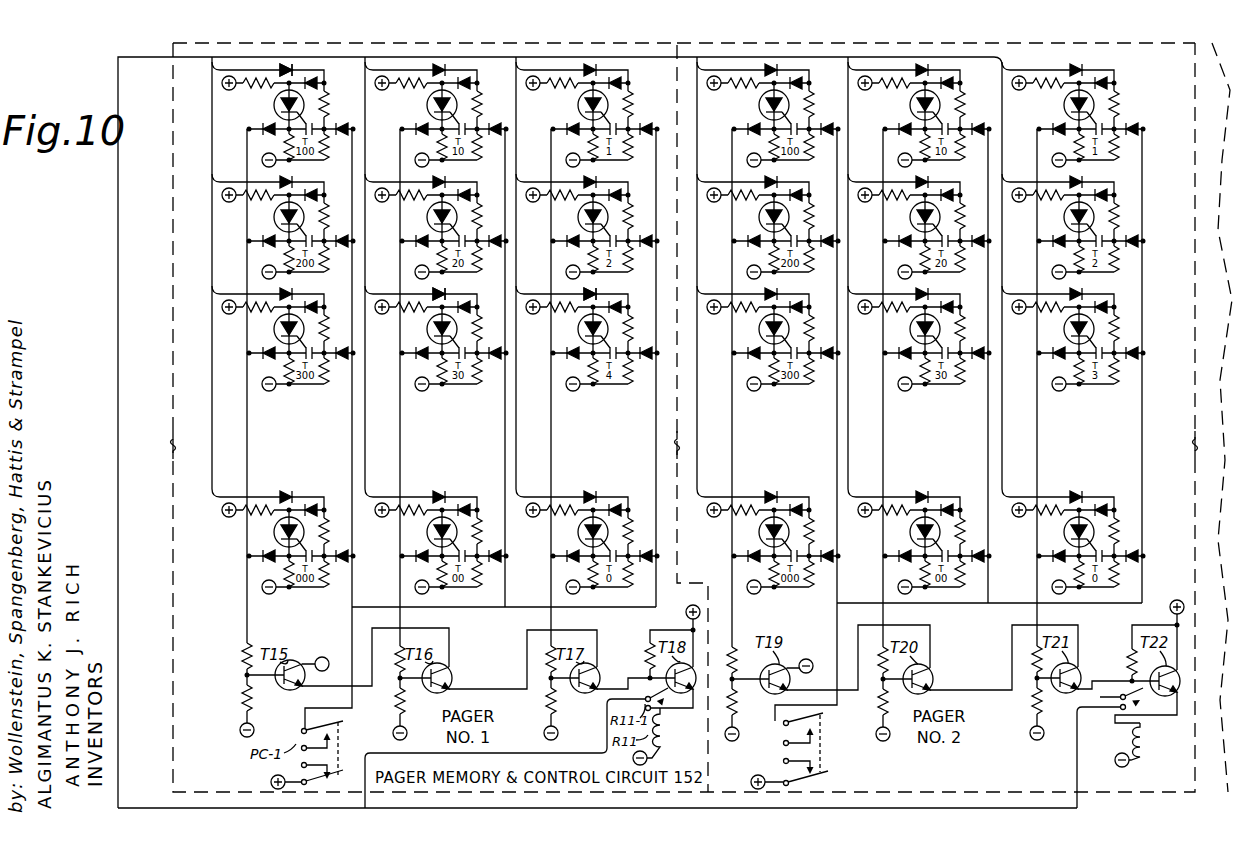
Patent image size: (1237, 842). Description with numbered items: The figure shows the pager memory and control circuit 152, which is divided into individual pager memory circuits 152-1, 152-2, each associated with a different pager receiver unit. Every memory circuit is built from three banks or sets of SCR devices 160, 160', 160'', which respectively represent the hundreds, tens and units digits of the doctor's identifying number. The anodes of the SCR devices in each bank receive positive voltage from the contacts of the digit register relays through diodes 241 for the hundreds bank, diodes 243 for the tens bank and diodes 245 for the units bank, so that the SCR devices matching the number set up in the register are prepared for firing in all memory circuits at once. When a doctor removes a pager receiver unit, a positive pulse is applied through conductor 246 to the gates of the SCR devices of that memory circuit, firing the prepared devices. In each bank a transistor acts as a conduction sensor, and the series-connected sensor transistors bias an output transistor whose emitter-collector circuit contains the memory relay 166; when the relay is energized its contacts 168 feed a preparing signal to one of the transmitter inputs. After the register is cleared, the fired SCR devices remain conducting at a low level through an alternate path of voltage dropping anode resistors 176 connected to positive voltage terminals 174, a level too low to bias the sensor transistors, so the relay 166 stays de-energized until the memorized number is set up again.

The pager memory and control circuit 152 is at (168, 38).
The pager memory circuit 152-1 is at (550, 44).
The pager memory circuit 152-2 is at (828, 44).
The current limiting resistor 176 is at (608, 296).
The positive voltage terminal 174 is at (641, 314).
The diode 241 is at (288, 64).
The diode 243 is at (446, 298).
The diode 245 is at (597, 298).
The set of SCR memory devices 160 is at (284, 352).
The set of SCR memory devices 160' is at (437, 354).
The set of SCR memory devices 160'' is at (588, 354).
The conductor 246 is at (350, 636).
The relay contacts 168 is at (1123, 690).
The memory relay 166 is at (1145, 748).